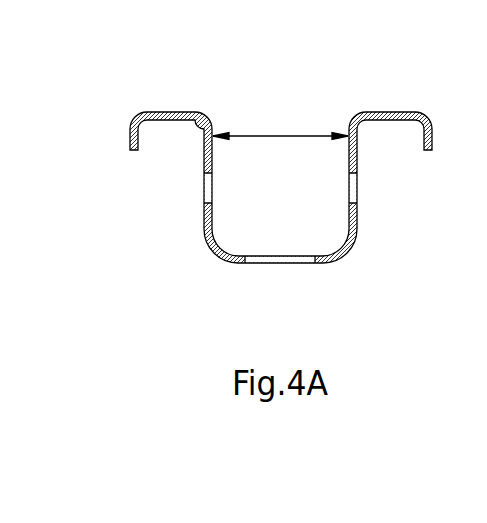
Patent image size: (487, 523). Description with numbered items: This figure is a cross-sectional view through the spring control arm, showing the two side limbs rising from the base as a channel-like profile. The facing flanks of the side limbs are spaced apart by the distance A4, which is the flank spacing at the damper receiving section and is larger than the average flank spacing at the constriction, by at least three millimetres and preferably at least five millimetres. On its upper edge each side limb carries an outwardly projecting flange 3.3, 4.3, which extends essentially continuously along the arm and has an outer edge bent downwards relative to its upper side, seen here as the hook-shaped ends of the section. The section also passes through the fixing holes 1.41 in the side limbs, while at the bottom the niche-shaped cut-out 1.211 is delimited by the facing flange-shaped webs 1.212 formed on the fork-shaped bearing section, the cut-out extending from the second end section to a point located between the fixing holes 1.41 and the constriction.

The outwardly projecting flange 3.3 is at (170, 112).
The outwardly projecting flange 4.3 is at (392, 112).
The fixing holes 1.41 is at (205, 188).
The niche-shaped cut-out 1.211 is at (281, 263).
The flange-shaped webs 1.212 is at (327, 256).
The distance of the flanks at the damper receiving section A4 is at (280, 124).